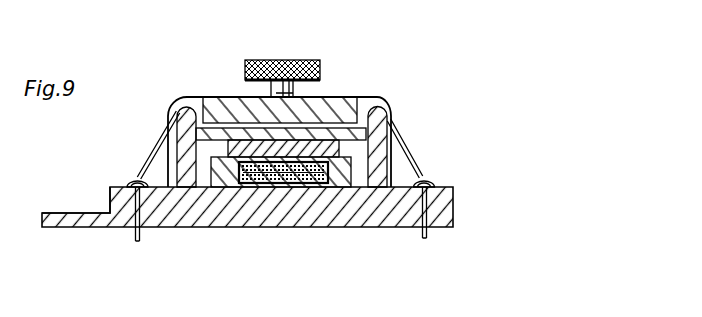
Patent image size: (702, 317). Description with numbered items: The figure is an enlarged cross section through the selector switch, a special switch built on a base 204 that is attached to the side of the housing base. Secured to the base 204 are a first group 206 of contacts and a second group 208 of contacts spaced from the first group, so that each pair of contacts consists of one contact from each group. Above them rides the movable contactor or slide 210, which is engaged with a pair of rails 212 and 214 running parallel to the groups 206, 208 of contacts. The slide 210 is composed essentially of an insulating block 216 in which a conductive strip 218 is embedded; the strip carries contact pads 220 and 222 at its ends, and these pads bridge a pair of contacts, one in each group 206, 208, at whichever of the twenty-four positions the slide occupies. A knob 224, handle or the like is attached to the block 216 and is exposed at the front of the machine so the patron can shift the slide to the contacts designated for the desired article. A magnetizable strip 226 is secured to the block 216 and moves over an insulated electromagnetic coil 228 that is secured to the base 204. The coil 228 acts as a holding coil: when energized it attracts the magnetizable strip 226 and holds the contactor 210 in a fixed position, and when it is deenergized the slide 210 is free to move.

The base 204 is at (220, 208).
The first group of contacts 206 is at (127, 184).
The second group of contacts 208 is at (435, 182).
The movable contactor 210 is at (403, 150).
The rail 212 is at (388, 107).
The rail 214 is at (173, 112).
The insulating block 216 is at (343, 95).
The conductive strip 218 is at (217, 122).
The contact pad 220 is at (430, 178).
The contact pad 222 is at (130, 174).
The knob 224 is at (292, 62).
The magnetizable strip 226 is at (237, 140).
The electromagnetic coil 228 is at (307, 185).